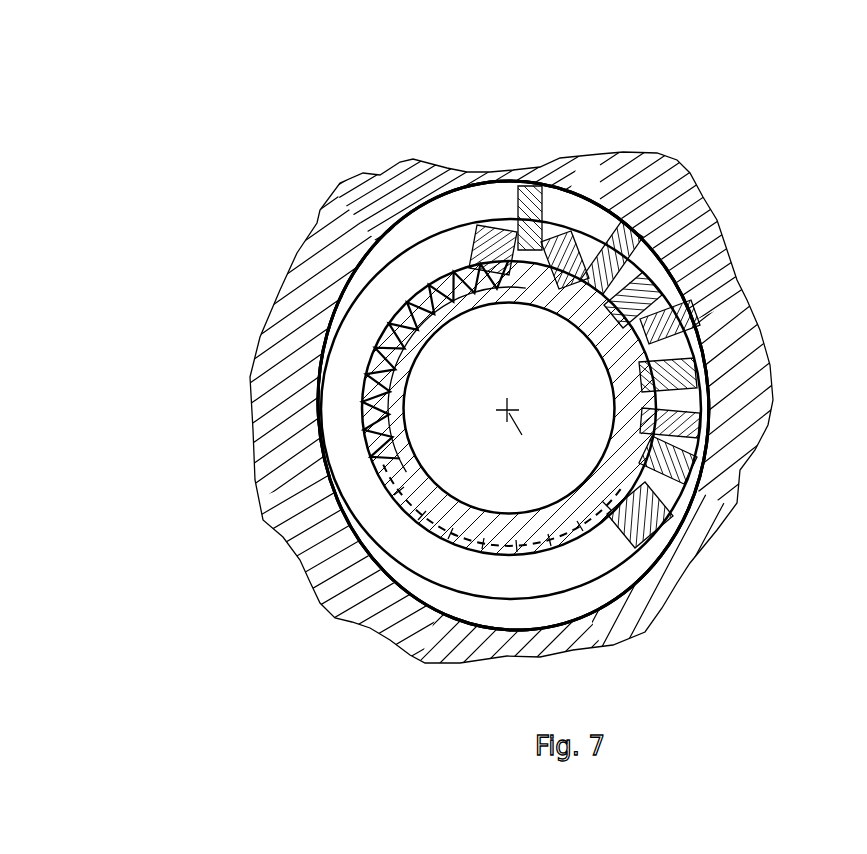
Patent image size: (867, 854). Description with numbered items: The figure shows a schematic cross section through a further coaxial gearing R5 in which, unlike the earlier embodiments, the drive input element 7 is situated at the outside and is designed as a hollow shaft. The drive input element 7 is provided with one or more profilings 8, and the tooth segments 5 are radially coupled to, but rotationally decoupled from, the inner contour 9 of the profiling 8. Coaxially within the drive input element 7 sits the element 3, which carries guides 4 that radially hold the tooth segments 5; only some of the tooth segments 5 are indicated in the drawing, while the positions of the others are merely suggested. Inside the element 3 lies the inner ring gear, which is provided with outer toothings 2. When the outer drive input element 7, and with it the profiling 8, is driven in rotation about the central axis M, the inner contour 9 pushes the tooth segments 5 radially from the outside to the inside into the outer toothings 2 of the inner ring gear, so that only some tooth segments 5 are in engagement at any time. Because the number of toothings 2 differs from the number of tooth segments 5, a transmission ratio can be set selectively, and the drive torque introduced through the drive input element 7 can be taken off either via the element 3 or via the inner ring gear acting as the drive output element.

The drive input element 7 is at (358, 212).
The inner contour 9 is at (362, 263).
The element 3 is at (413, 563).
The profiling 8 is at (302, 430).
The toothing 2 is at (400, 320).
The central axis M is at (521, 429).
The tooth segments 5 is at (528, 200).
The guides 4 is at (662, 494).
The gearing R5 is at (692, 126).